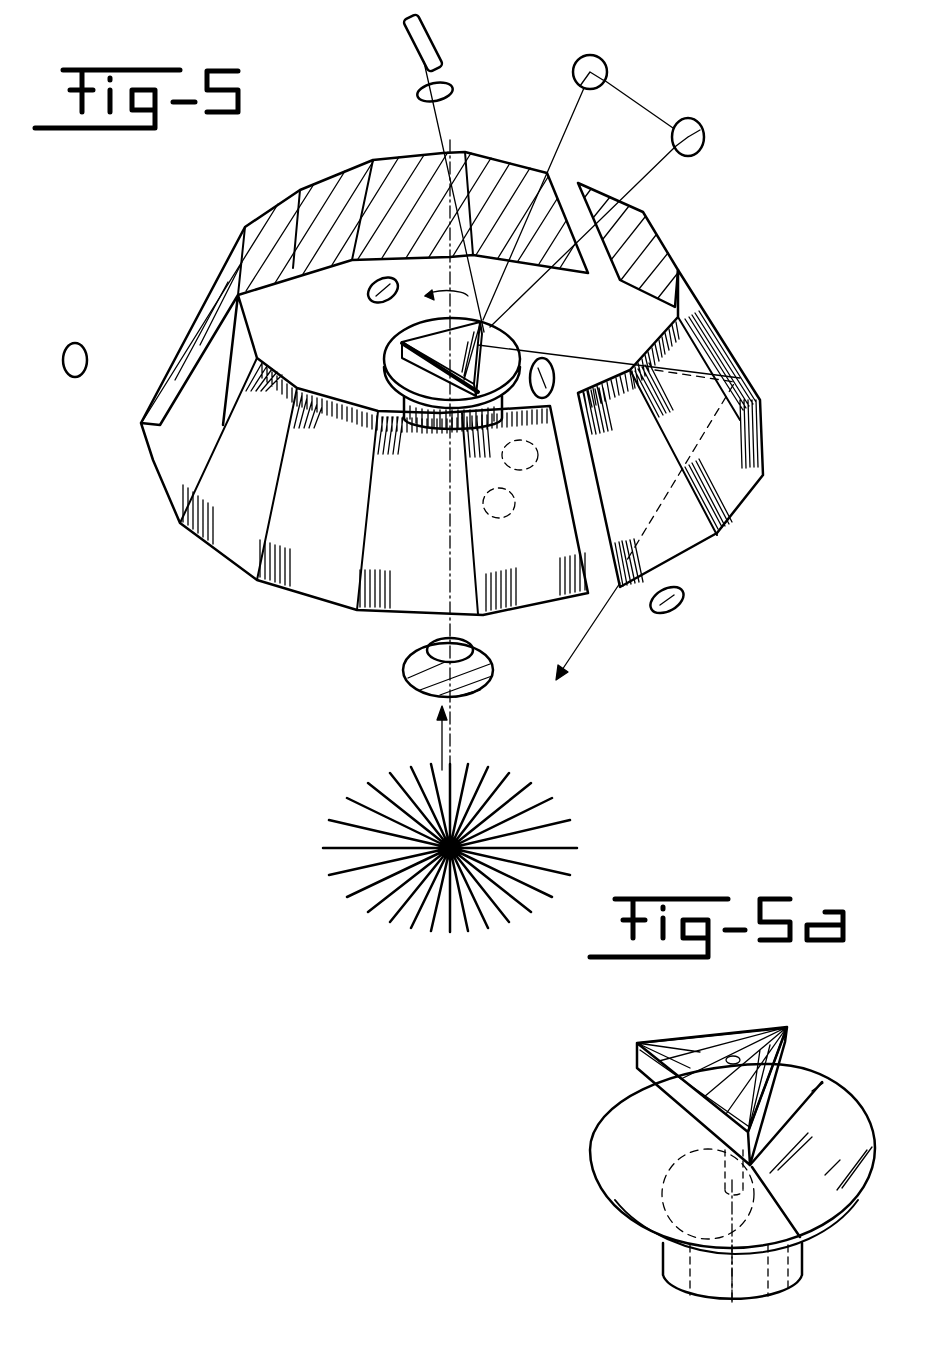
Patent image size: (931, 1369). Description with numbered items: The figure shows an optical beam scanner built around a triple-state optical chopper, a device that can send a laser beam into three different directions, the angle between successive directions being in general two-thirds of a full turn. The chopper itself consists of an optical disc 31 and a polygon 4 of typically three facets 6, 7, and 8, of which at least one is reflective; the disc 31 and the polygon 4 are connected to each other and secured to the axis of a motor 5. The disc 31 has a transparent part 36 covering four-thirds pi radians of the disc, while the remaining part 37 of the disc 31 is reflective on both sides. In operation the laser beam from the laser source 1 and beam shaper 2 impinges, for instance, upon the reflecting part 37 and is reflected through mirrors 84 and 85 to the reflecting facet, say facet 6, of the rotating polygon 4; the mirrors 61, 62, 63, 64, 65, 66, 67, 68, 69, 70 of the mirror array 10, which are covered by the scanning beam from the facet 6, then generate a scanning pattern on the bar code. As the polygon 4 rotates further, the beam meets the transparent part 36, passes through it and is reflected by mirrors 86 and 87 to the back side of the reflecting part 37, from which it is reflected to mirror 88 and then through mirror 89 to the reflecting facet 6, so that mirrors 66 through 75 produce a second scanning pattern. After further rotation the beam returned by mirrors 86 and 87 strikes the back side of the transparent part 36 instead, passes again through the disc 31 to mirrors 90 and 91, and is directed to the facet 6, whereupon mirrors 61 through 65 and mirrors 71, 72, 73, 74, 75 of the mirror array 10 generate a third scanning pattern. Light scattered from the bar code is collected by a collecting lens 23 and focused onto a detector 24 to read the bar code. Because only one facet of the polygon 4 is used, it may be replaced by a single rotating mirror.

In FIG. 5, the laser source 1 is at (411, 40).
In FIG. 5, the beam shaper 2 is at (418, 92).
In FIG. 5, the polygon 4 is at (403, 322).
In FIG. 5A, the polygon 4 is at (672, 1035).
In FIG. 5, the motor 5 is at (405, 407).
In FIG. 5A, the motor 5 is at (680, 1263).
In FIG. 5A, the facet 6 is at (787, 1060).
In FIG. 5A, the facet 7 is at (747, 1025).
In FIG. 5A, the facet 8 is at (643, 1068).
In FIG. 5, the mirror array 10 is at (722, 291).
In FIG. 5, the collecting lens 23 is at (476, 693).
In FIG. 5, the detector 24 is at (465, 648).
In FIG. 5A, the optical disc 31 is at (590, 1153).
In FIG. 5A, the transparent part 36 is at (633, 1200).
In FIG. 5, the reflecting part 37 is at (516, 343).
In FIG. 5A, the reflecting part 37 is at (823, 1210).
In FIG. 5, the mirror 61 is at (692, 543).
In FIG. 5, the mirror 62 is at (748, 503).
In FIG. 5, the mirror 63 is at (740, 348).
In FIG. 5, the mirror 64 is at (666, 254).
In FIG. 5, the mirror 65 is at (587, 186).
In FIG. 5, the mirror 66 is at (540, 172).
In FIG. 5, the mirror 67 is at (408, 162).
In FIG. 5, the mirror 68 is at (352, 175).
In FIG. 5, the mirror 69 is at (292, 200).
In FIG. 5, the mirror 70 is at (232, 272).
In FIG. 5, the mirror 71 is at (160, 458).
In FIG. 5, the mirror 72 is at (202, 536).
In FIG. 5, the mirror 73 is at (306, 596).
In FIG. 5, the mirror 74 is at (386, 620).
In FIG. 5, the mirror 75 is at (544, 608).
In FIG. 5, the mirror 84 is at (590, 55).
In FIG. 5, the mirror 85 is at (703, 138).
In FIG. 5, the mirror 86 is at (522, 460).
In FIG. 5, the mirror 87 is at (550, 358).
In FIG. 5, the mirror 88 is at (500, 520).
In FIG. 5, the mirror 89 is at (68, 343).
In FIG. 5, the mirror 90 is at (367, 290).
In FIG. 5, the mirror 91 is at (684, 600).